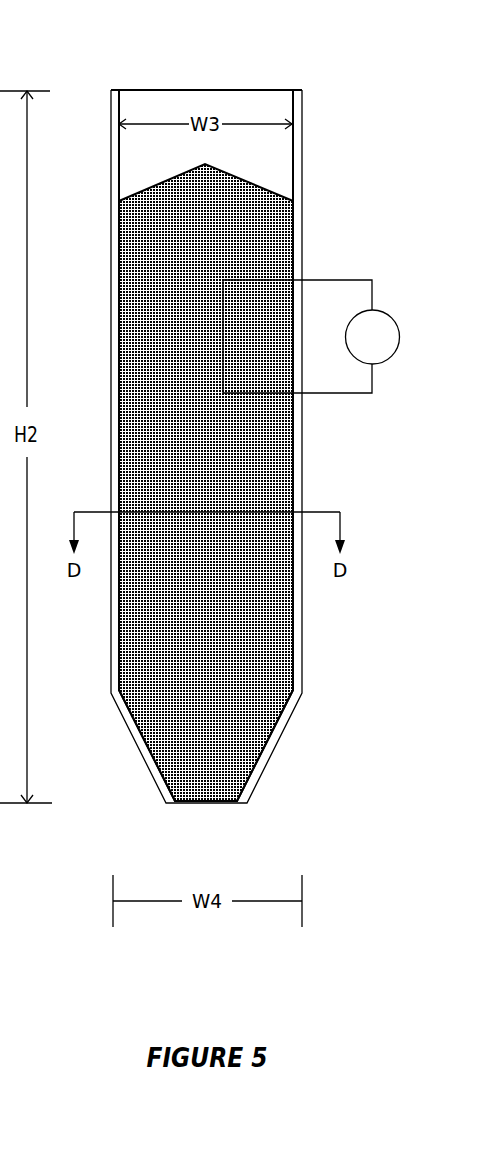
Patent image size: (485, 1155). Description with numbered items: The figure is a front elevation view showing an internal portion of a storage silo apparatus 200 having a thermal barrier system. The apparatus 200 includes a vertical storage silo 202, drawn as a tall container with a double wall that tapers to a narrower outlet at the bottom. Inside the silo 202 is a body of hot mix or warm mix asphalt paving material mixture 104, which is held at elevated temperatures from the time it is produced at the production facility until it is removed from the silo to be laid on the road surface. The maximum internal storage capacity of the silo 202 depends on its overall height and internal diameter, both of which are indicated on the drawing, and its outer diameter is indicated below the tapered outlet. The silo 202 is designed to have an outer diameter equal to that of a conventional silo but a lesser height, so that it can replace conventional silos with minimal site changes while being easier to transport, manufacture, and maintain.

The storage silo apparatus 200 is at (206, 40).
The vertical storage silo 202 is at (307, 161).
The asphalt paving material mixture 104 is at (267, 230).